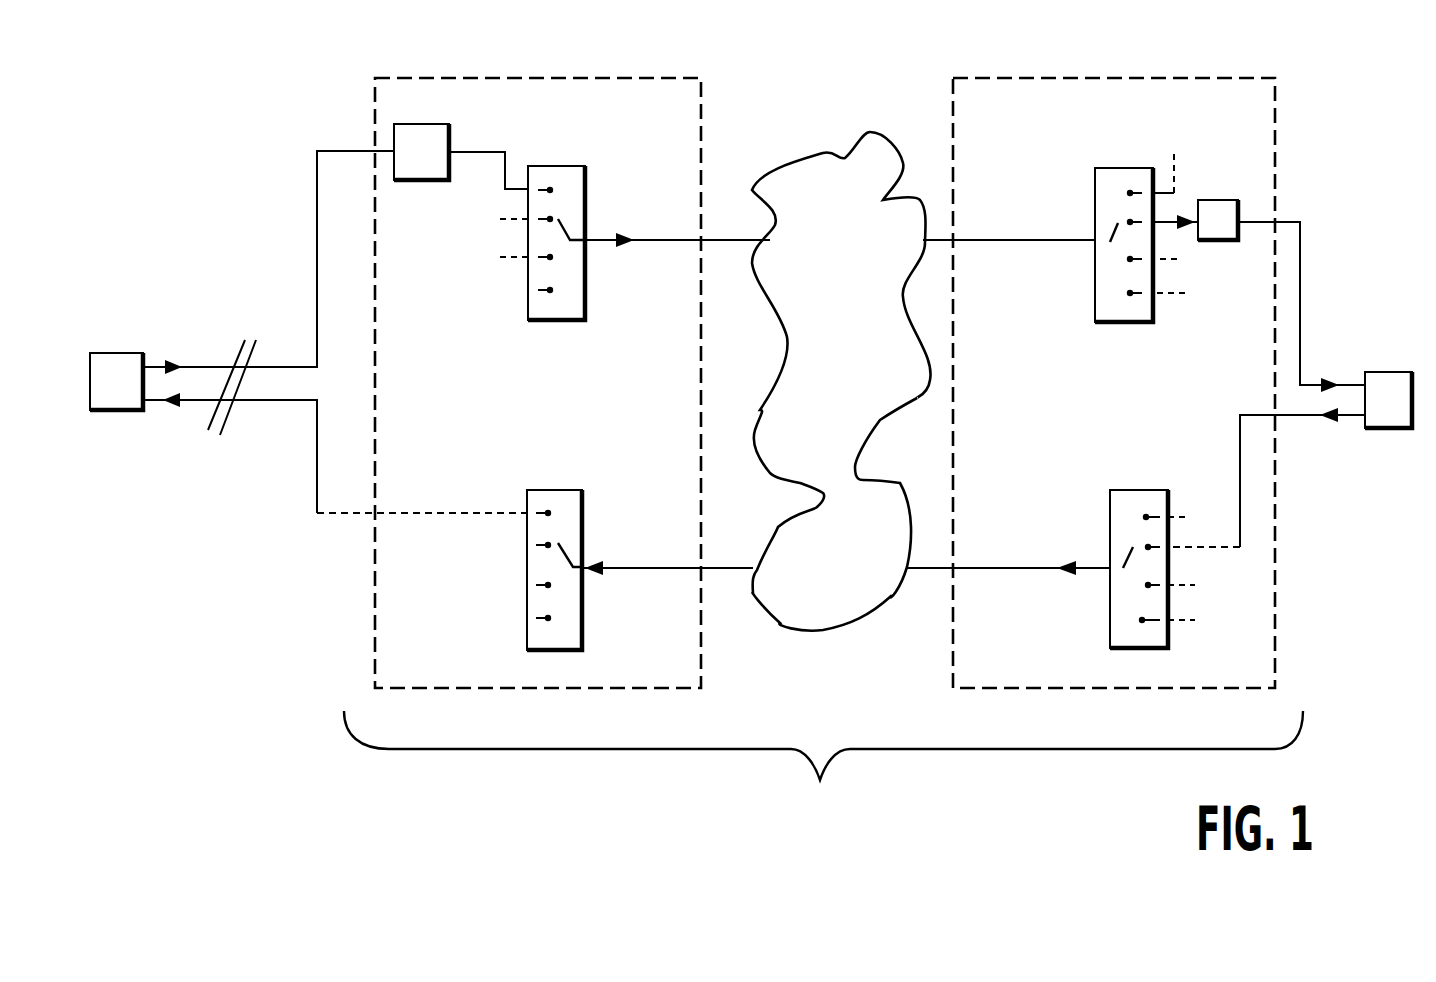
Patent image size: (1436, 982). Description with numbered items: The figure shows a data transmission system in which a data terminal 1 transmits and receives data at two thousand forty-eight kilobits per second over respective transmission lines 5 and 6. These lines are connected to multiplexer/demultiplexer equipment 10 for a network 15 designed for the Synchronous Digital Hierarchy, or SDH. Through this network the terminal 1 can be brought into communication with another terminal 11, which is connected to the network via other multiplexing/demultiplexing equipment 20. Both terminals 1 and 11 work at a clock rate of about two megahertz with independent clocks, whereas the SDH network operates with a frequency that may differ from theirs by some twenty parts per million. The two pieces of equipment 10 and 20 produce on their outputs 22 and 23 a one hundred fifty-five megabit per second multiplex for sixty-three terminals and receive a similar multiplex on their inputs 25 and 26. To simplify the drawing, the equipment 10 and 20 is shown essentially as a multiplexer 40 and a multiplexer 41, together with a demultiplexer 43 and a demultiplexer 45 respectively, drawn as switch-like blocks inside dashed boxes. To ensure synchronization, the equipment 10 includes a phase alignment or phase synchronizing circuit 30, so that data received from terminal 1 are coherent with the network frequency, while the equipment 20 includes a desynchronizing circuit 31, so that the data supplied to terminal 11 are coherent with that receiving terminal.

The data terminal 1 is at (118, 410).
The transmission line 5 is at (194, 367).
The transmission line 6 is at (187, 400).
The multiplexer/demultiplexer equipment 10 is at (372, 600).
The terminal 11 is at (1385, 428).
The network 15 is at (820, 780).
The multiplexing/demultiplexing equipment 20 is at (1276, 575).
The output 22 is at (703, 240).
The output 23 is at (945, 568).
The input 25 is at (703, 568).
The input 26 is at (945, 240).
The phase synchronizing circuit 30 is at (430, 180).
The desynchronizing circuit 31 is at (1220, 240).
The multiplexer 40 is at (565, 320).
The multiplexer 41 is at (1110, 607).
The demultiplexer 43 is at (1132, 322).
The demultiplexer 45 is at (585, 595).